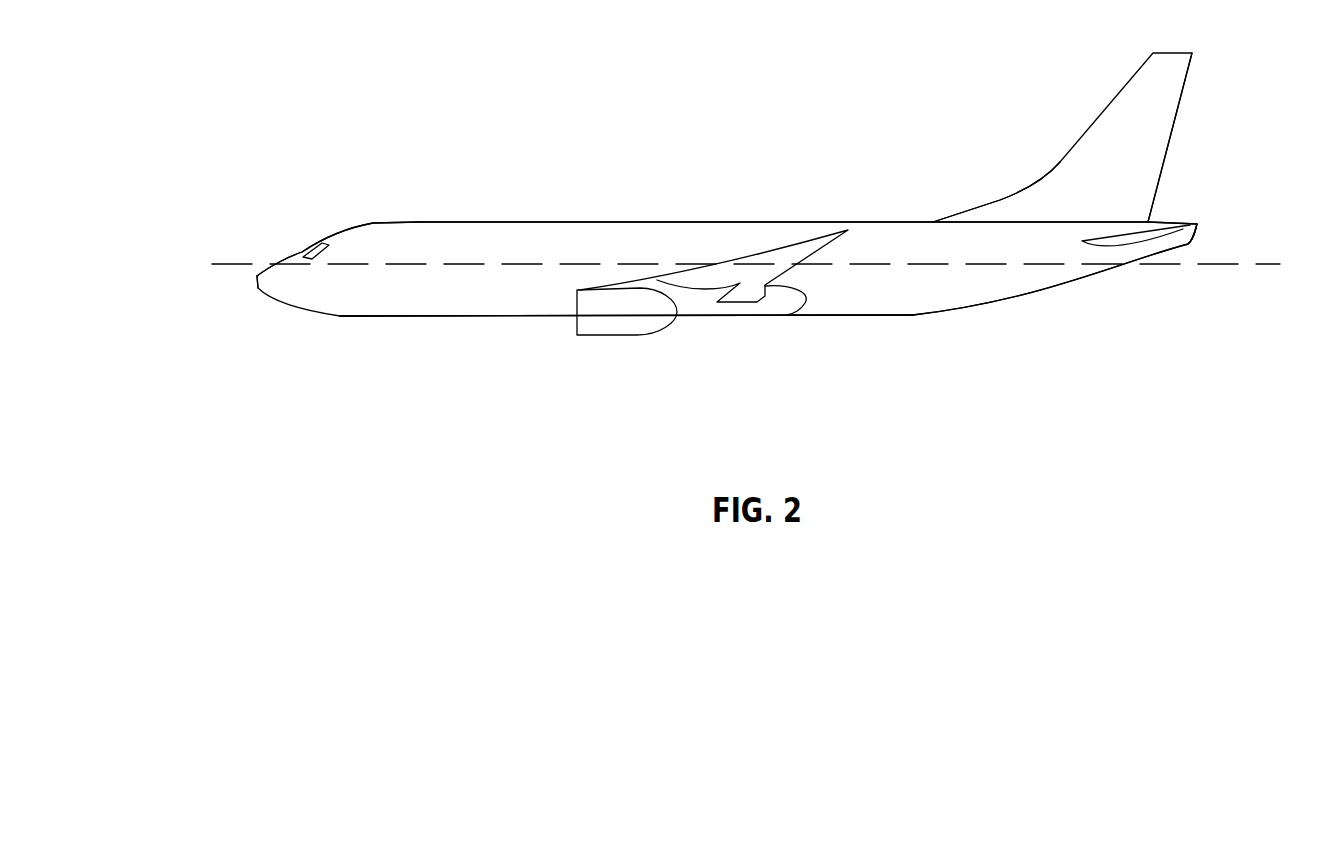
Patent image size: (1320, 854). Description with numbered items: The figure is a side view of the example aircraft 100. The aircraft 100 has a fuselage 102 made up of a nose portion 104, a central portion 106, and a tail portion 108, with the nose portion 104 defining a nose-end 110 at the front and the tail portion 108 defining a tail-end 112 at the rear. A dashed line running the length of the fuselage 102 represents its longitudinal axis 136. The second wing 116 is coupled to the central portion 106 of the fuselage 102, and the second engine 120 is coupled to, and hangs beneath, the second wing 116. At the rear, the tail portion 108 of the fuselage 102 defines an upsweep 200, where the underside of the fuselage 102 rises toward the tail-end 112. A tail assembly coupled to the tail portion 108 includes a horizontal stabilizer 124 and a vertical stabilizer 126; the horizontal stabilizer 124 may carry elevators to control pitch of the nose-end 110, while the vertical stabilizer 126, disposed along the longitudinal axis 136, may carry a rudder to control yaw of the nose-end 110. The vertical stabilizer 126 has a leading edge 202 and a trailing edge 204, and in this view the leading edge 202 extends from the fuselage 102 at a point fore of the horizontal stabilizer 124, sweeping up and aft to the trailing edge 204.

The aircraft 100 is at (689, 219).
The fuselage 102 is at (555, 254).
The nose portion 104 is at (287, 236).
The central portion 106 is at (656, 203).
The tail portion 108 is at (920, 198).
The nose-end 110 is at (257, 278).
The tail-end 112 is at (1192, 241).
The second wing 116 is at (810, 235).
The second engine 120 is at (577, 320).
The horizontal stabilizer 124 is at (1177, 220).
The vertical stabilizer 126 is at (1113, 102).
The longitudinal axis 136 is at (400, 263).
The upsweep 200 is at (942, 315).
The leading edge 202 is at (1060, 165).
The trailing edge 204 is at (1183, 100).